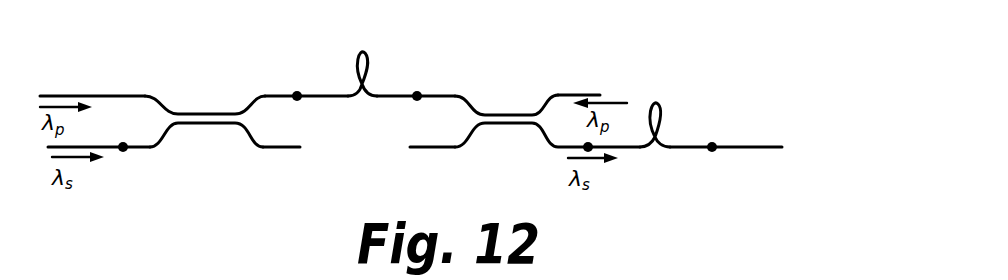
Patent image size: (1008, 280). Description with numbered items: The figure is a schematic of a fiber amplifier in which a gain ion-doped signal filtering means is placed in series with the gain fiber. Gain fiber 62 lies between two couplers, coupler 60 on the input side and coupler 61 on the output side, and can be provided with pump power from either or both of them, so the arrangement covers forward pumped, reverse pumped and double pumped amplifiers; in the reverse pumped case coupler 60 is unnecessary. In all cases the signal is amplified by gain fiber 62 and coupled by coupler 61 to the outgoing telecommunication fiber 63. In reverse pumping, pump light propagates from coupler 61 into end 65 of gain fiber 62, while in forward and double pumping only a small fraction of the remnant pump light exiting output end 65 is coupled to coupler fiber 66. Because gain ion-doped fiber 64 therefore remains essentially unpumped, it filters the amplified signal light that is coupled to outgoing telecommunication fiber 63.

The coupler 60 is at (205, 132).
The coupler 61 is at (505, 104).
The gain fiber 62 is at (365, 53).
The outgoing telecommunication fiber 63 is at (753, 148).
The gain ion-doped fiber 64 is at (712, 95).
The output end of gain fiber 65 is at (398, 97).
The coupler fiber 66 is at (546, 142).